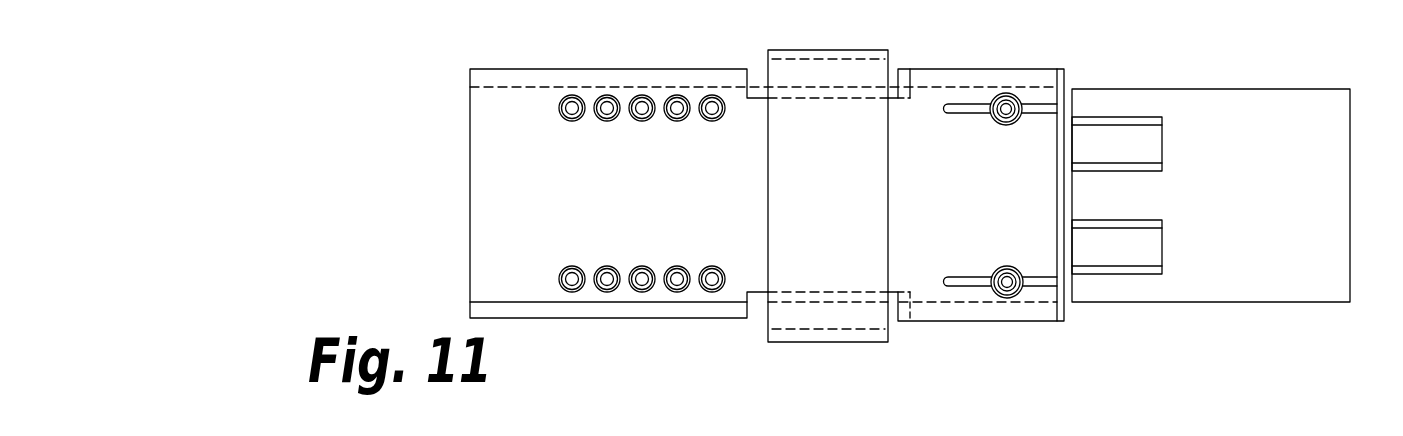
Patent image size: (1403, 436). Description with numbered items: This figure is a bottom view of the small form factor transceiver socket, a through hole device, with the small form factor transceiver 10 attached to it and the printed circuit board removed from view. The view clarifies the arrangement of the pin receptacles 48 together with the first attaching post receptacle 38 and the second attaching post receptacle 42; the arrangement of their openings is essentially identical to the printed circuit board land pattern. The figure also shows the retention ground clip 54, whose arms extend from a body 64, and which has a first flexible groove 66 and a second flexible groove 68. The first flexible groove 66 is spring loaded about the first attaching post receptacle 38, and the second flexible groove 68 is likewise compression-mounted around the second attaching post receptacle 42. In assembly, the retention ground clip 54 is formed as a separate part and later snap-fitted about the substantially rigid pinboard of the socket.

The small form factor transceiver 10 is at (1248, 89).
The first attaching post receptacle 38 is at (1020, 294).
The second attaching post receptacle 42 is at (1022, 102).
The pin receptacles 48 is at (710, 96).
The retention ground clip 54 is at (922, 69).
The body 64 is at (768, 174).
The first flexible groove 66 is at (962, 283).
The second flexible groove 68 is at (970, 108).